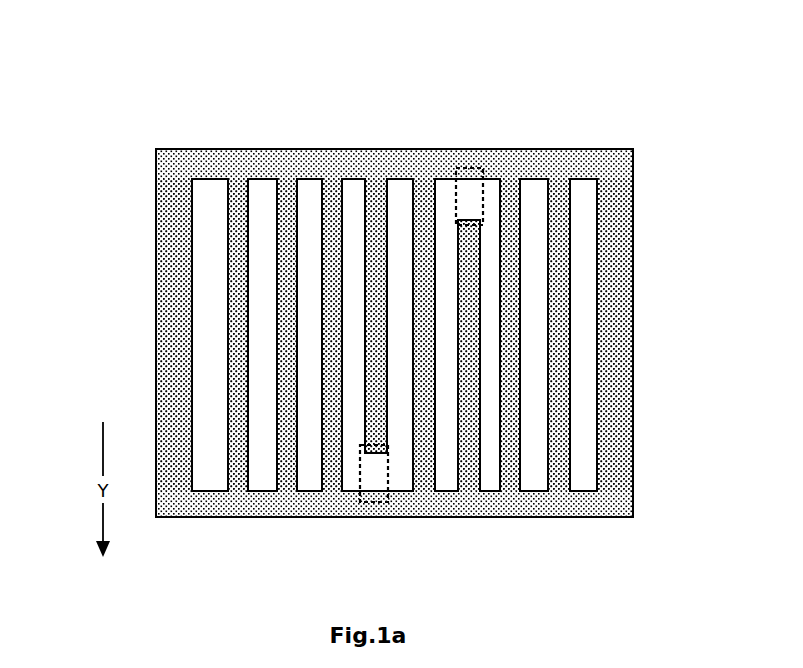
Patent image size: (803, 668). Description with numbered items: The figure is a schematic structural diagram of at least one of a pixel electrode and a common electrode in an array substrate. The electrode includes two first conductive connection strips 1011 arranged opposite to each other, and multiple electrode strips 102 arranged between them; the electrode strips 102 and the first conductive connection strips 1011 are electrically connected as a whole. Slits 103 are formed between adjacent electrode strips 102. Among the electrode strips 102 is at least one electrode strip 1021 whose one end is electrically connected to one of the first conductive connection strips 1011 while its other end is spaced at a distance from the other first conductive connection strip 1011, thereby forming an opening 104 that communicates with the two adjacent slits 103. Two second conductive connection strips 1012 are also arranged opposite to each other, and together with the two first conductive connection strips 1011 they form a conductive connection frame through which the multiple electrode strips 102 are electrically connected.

The first conductive connection strip 1011 is at (550, 165).
The second conductive connection strip 1012 is at (607, 205).
The electrode strip 102 is at (238, 205).
The slit 103 is at (208, 280).
The electrode strip 1021 is at (472, 465).
The opening 104 is at (482, 172).